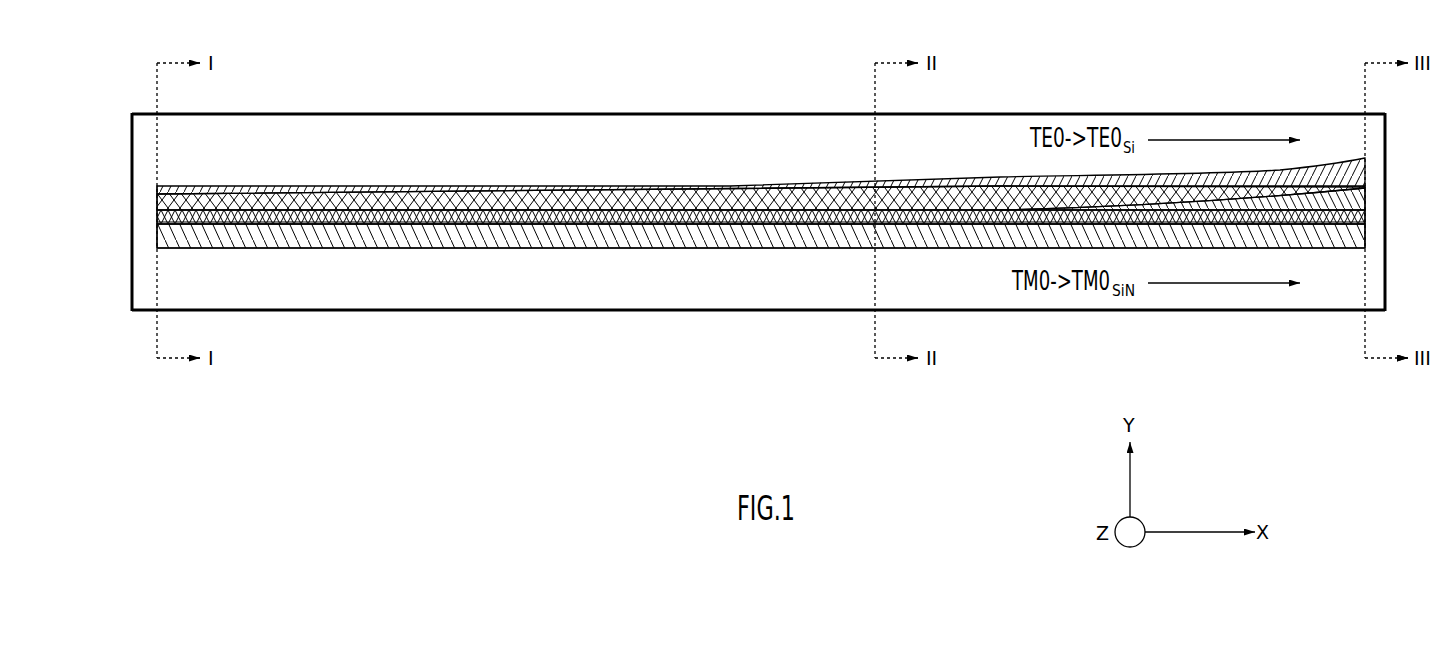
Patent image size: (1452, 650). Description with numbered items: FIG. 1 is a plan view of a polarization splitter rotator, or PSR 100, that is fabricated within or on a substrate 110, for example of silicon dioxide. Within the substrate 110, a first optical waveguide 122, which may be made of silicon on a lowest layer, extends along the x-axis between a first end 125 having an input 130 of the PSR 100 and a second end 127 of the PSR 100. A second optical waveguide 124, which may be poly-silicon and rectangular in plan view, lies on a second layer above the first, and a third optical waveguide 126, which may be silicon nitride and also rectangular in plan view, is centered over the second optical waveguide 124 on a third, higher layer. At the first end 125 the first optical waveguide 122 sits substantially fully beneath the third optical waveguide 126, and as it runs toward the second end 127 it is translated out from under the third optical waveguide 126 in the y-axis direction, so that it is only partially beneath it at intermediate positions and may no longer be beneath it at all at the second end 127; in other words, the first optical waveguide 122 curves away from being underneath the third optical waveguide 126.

The polarization splitter rotator 100 is at (758, 196).
The substrate 110 is at (655, 297).
The first optical waveguide 122 is at (250, 238).
The second optical waveguide 124 is at (1367, 203).
The third optical waveguide 126 is at (1357, 237).
The first end 125 is at (120, 215).
The second end 127 is at (1398, 269).
The input 130 is at (157, 248).